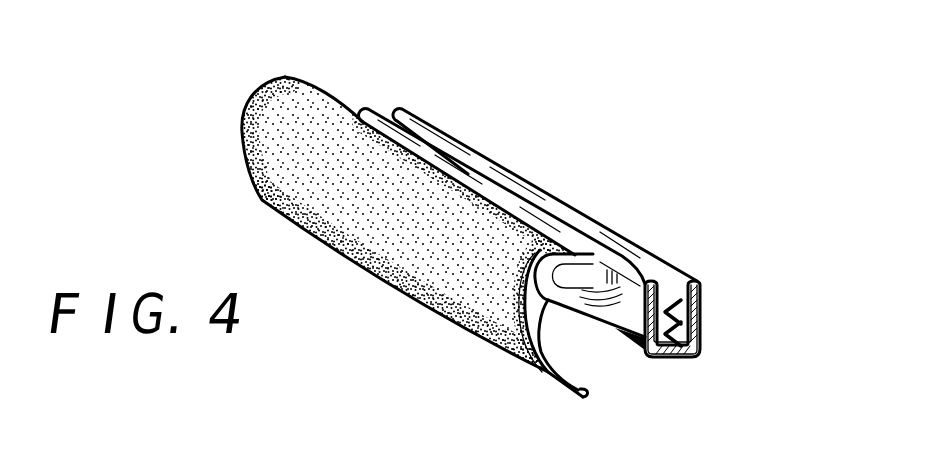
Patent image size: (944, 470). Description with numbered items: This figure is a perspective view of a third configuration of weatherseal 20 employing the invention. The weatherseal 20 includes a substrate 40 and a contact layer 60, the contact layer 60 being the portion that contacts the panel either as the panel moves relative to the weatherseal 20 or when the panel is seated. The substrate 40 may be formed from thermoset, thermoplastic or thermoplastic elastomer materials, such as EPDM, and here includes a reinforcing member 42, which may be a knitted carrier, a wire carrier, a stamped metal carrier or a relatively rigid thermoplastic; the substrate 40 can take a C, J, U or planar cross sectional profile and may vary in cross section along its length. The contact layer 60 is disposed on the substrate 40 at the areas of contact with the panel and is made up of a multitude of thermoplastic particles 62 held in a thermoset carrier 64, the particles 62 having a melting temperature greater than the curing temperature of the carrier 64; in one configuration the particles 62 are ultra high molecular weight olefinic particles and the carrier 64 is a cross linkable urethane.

The weatherseal 20 is at (673, 215).
The substrate 40 is at (590, 386).
The reinforcing member 42 is at (703, 317).
The contact layer 60 is at (522, 366).
The thermoplastic particles 62 is at (271, 93).
The thermoset carrier 64 is at (313, 83).